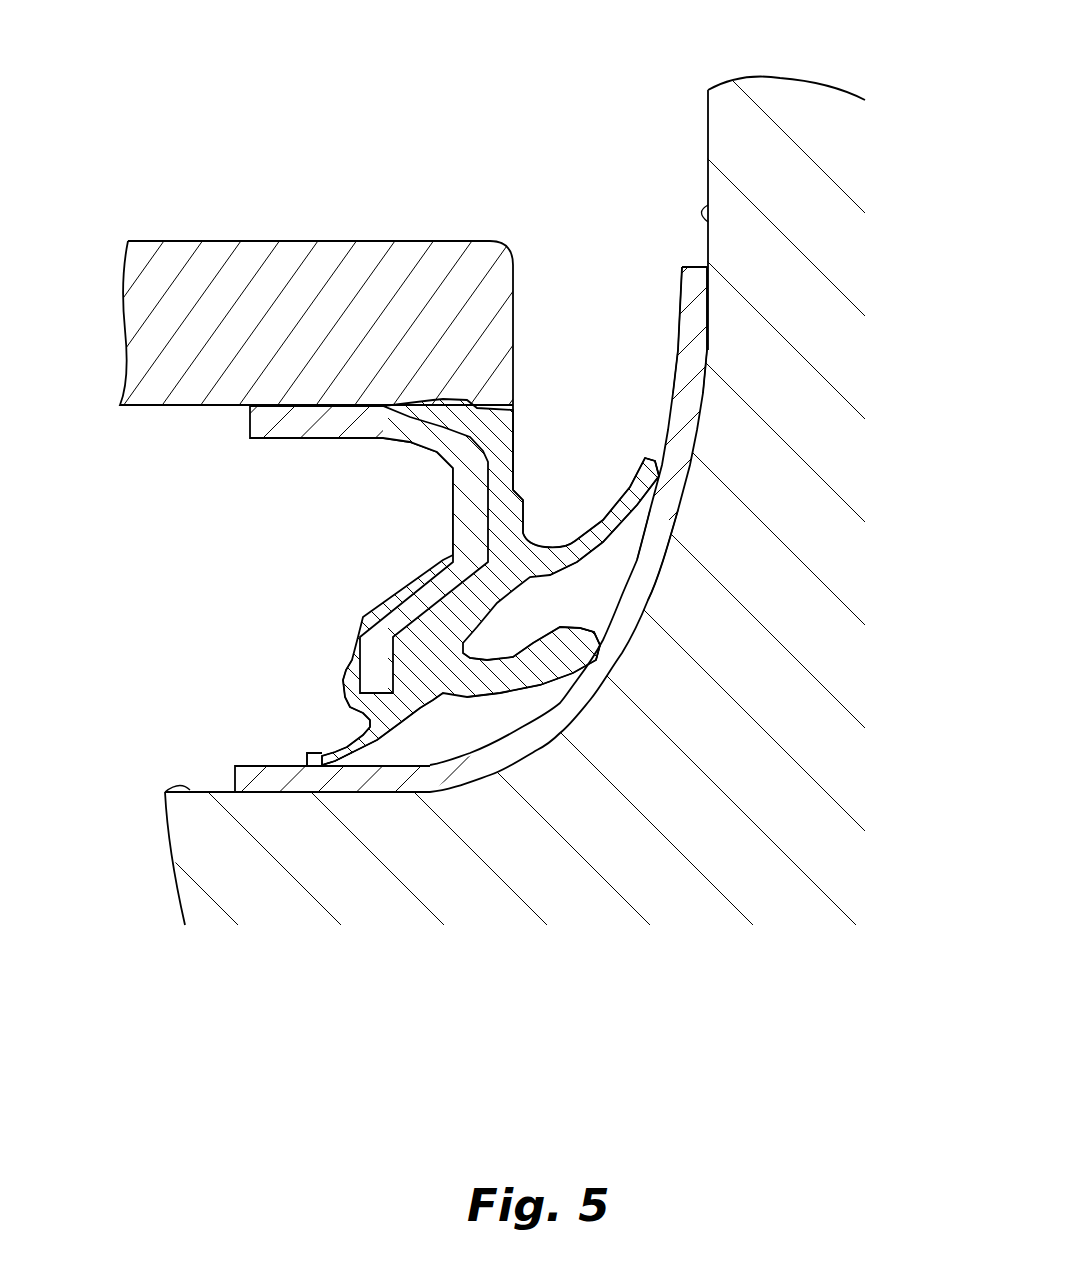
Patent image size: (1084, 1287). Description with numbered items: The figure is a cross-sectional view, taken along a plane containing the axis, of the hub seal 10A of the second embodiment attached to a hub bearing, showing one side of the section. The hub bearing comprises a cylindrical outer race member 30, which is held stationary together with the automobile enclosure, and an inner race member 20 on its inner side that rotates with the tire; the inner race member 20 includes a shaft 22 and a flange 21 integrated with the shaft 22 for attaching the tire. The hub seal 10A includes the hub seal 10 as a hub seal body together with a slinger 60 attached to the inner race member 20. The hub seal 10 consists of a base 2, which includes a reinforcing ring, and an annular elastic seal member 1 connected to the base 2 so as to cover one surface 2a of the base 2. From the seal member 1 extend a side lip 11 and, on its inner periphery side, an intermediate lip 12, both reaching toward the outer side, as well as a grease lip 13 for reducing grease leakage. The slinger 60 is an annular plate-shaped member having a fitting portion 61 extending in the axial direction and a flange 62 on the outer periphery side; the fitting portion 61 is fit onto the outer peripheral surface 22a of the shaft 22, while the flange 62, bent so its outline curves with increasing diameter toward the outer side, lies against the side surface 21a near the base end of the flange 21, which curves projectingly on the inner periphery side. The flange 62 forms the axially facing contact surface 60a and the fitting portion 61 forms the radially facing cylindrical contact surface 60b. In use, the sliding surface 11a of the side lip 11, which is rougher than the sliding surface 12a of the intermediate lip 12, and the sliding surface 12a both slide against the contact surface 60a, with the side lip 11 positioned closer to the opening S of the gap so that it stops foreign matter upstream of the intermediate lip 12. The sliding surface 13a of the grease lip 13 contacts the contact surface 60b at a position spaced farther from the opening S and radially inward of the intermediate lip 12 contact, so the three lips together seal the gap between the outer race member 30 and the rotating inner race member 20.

The seal member 1 is at (524, 480).
The base 2 is at (337, 440).
The one surface of the base 2a is at (497, 510).
The hub seal 10 is at (566, 352).
The hub seal according to the second embodiment 10A is at (528, 1073).
The side lip 11 is at (598, 522).
The sliding surface of the side lip 11a is at (655, 480).
The intermediate lip 12 is at (512, 658).
The sliding surface of the intermediate lip 12a is at (600, 655).
The grease lip 13 is at (362, 732).
The sliding surface of the grease lip 13a is at (322, 766).
The inner race member 20 is at (160, 793).
The flange 21 is at (713, 95).
The side surface of the flange 21a is at (708, 222).
The shaft 22 is at (213, 866).
The outer peripheral surface of the shaft 22a is at (166, 800).
The outer race member 30 is at (214, 240).
The slinger 60 is at (669, 308).
The contact surface of the slinger (flange) 60a is at (605, 615).
The contact surface of the slinger (fitting portion) 60b is at (307, 764).
The fitting portion 61 is at (265, 793).
The flange of the slinger 62 is at (670, 420).
The opening of the gap S is at (705, 178).